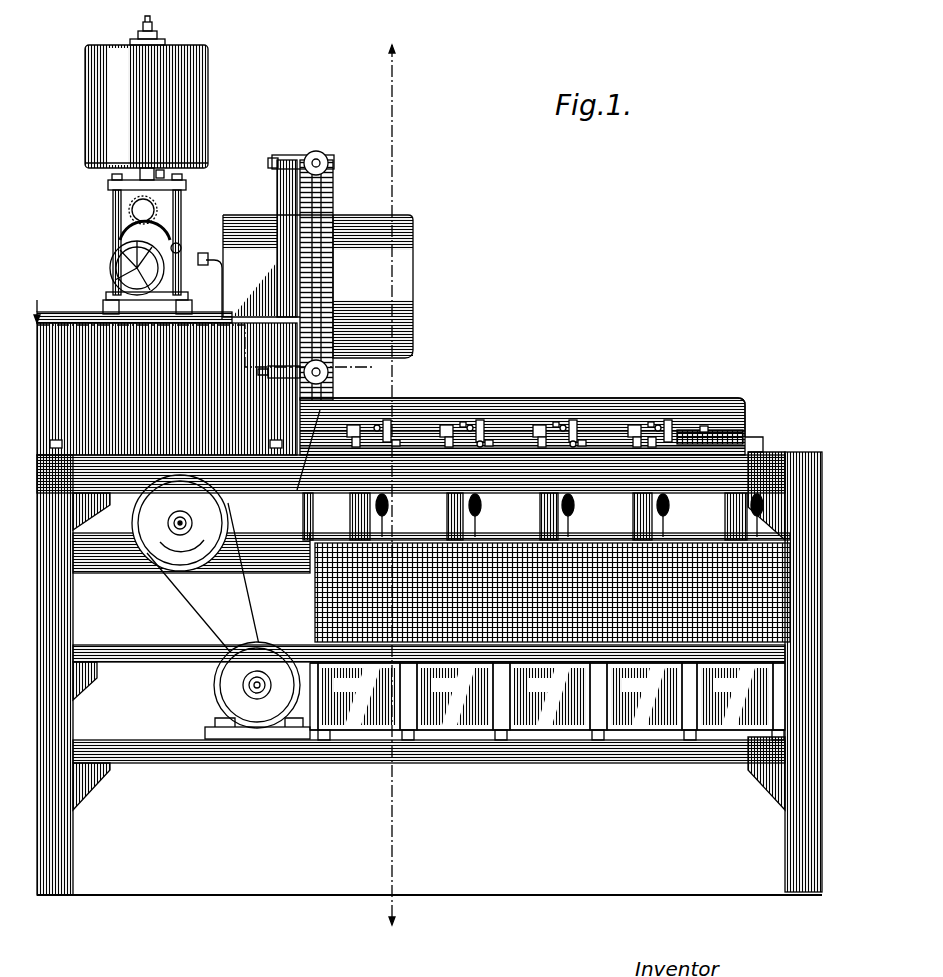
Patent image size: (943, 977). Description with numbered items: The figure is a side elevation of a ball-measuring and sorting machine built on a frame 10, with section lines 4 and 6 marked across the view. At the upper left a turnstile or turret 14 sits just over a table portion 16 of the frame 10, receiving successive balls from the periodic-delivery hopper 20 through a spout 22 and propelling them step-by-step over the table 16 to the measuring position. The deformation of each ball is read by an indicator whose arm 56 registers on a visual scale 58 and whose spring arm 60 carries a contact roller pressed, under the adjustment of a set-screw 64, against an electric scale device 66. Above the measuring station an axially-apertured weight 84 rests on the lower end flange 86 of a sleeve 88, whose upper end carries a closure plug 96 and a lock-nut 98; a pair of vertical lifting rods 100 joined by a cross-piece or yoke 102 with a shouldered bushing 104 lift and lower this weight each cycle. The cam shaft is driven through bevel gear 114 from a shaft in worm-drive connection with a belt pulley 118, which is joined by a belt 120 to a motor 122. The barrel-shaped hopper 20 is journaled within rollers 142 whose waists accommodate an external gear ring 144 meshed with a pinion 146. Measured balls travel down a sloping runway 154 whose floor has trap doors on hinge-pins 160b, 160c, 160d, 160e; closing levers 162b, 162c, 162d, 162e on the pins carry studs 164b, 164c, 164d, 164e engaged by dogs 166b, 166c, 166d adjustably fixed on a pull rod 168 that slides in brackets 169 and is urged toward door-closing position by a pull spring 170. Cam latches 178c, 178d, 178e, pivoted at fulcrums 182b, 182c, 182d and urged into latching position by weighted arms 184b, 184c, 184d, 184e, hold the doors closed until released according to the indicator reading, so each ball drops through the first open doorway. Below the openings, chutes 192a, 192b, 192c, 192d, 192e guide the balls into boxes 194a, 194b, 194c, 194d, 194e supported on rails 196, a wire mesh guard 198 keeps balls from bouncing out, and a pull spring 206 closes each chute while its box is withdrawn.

The section line 4- 4 is at (381, 367).
The section line 6- 6 is at (392, 55).
The frame 10 is at (60, 621).
The turnstile or turret 14 is at (106, 296).
The table portion 16 is at (72, 312).
The periodic-delivery hopper 20 is at (318, 286).
The spout 22 is at (208, 253).
The arm 56 is at (114, 253).
The visual scale 58 is at (112, 270).
The spring arm 60 is at (166, 235).
The set-screw 64 is at (180, 250).
The electric scale device 66 is at (132, 224).
The weight 84 is at (208, 102).
The lower end flange 86 is at (140, 175).
The sleeve 88 is at (135, 41).
The closure plug 96 is at (157, 36).
The lock-nut 98 is at (152, 29).
The vertical lifting rods 100 is at (113, 201).
The cross-piece or yoke 102 is at (186, 186).
The shouldered bushing 104 is at (164, 176).
The bevel gear 114 is at (125, 533).
The belt pulley 118 is at (180, 523).
The belt 120 is at (190, 605).
The motor 122 is at (215, 692).
The rollers 142 is at (330, 160).
The external gear ring 144 is at (333, 203).
The pinion 146 is at (303, 492).
The runway 154 is at (748, 404).
The hinge-pin 160b is at (660, 428).
The hinge-pin 160c is at (565, 428).
The hinge-pin 160d is at (472, 428).
The hinge-pin 160e is at (380, 428).
The closing lever 162b is at (666, 422).
The closing lever 162c is at (571, 422).
The closing lever 162d is at (478, 422).
The closing lever 162e is at (385, 420).
The stud 164b is at (640, 455).
The stud 164c is at (537, 455).
The stud 164d is at (447, 455).
The stud 164e is at (352, 450).
The dog 166b is at (651, 422).
The dog 166c is at (556, 422).
The dog 166d is at (463, 422).
The pull rod 168 is at (650, 450).
The brackets 169 is at (395, 425).
The pull spring 170 is at (763, 443).
The cam latch 178c is at (585, 515).
The cam latch 178d is at (494, 515).
The cam latch 178e is at (401, 515).
The latch fulcrum 182b is at (700, 433).
The latch fulcrum 182c is at (576, 443).
The latch fulcrum 182d is at (483, 443).
The weighted arm 184b is at (715, 430).
The weighted arm 184c is at (583, 440).
The weighted arm 184d is at (490, 440).
The weighted arm 184e is at (397, 440).
The chute 192a is at (725, 512).
The chute 192b is at (633, 521).
The chute 192c is at (540, 521).
The chute 192d is at (447, 521).
The chute 192e is at (350, 521).
The box 194a is at (735, 696).
The box 194b is at (644, 696).
The box 194c is at (550, 696).
The box 194d is at (455, 696).
The box 194e is at (359, 696).
The brackets or rails 196 is at (325, 740).
The wire mesh guard 198 is at (315, 622).
The pull spring 206 is at (385, 476).